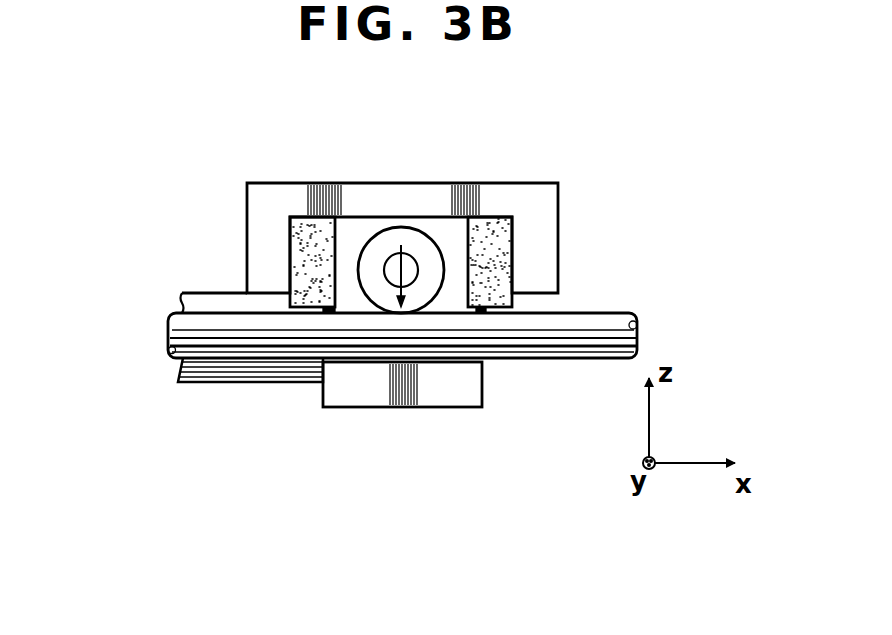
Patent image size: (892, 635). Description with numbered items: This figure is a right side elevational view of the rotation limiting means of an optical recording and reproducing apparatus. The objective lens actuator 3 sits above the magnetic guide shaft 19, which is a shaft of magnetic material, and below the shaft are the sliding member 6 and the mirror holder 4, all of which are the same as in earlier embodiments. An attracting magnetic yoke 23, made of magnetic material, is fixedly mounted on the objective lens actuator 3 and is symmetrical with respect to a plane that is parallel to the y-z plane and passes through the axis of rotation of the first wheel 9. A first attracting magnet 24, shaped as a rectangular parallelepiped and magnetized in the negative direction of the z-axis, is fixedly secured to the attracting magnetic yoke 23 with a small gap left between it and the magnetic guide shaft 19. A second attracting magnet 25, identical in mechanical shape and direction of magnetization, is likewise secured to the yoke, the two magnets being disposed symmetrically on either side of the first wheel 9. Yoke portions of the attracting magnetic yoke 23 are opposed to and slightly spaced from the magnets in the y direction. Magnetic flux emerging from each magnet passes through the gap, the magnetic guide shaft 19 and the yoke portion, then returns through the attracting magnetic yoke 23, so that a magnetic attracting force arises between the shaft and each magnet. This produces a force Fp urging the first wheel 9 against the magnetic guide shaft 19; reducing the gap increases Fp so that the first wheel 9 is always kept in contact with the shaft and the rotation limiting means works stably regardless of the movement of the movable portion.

The objective lens actuator 3 is at (547, 207).
The mirror holder 4 is at (462, 395).
The sliding member 6 is at (238, 368).
The first wheel 9 is at (412, 220).
The magnetic guide shaft 19 is at (603, 322).
The attracting magnetic yoke 23 is at (323, 183).
The first attracting magnet 24 is at (503, 255).
The second attracting magnet 25 is at (298, 242).
The force Fp is at (418, 267).